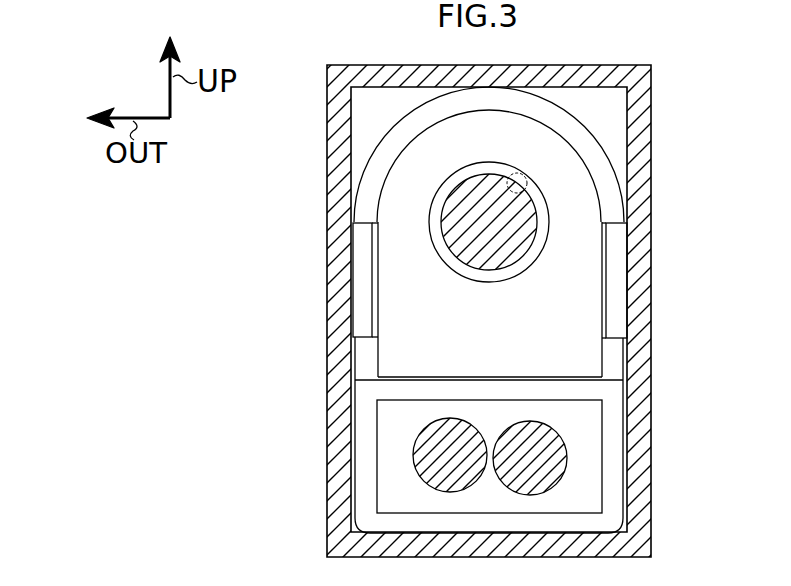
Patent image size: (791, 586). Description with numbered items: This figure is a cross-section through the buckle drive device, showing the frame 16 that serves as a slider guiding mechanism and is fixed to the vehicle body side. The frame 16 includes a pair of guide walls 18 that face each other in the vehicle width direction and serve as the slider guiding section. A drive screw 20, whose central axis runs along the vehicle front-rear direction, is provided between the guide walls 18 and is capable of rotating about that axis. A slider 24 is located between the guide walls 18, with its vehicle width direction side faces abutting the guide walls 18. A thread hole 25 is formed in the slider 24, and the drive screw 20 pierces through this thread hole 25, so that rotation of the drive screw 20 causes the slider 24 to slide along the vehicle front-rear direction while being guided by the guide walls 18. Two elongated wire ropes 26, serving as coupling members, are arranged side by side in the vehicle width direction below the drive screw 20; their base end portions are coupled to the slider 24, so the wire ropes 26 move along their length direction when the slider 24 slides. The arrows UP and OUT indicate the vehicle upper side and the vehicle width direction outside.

The frame 16 is at (668, 80).
The guide walls 18 is at (327, 290).
The drive screw 20 is at (485, 283).
The slider 24 is at (608, 146).
The thread hole 25 is at (510, 193).
The wire ropes 26 is at (418, 468).